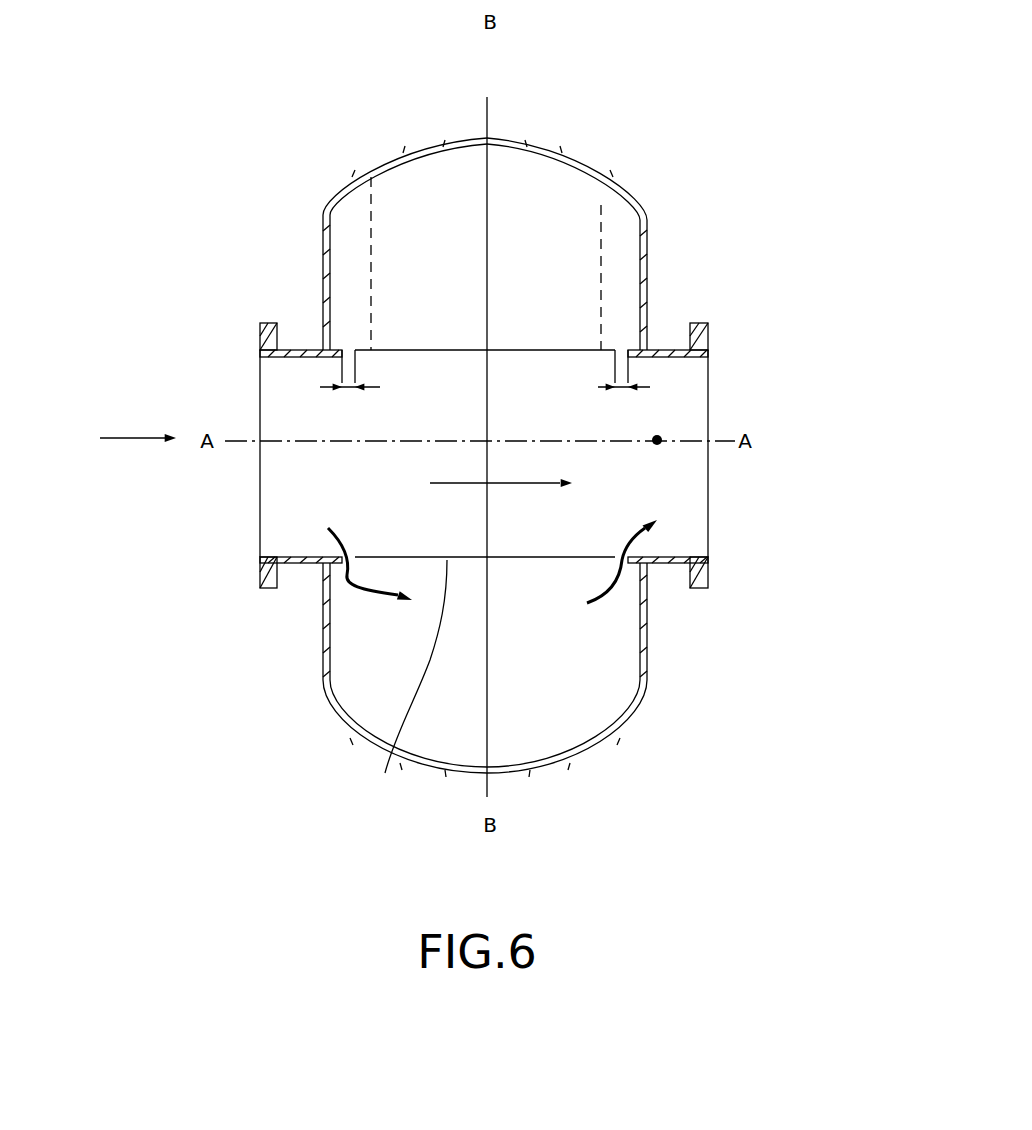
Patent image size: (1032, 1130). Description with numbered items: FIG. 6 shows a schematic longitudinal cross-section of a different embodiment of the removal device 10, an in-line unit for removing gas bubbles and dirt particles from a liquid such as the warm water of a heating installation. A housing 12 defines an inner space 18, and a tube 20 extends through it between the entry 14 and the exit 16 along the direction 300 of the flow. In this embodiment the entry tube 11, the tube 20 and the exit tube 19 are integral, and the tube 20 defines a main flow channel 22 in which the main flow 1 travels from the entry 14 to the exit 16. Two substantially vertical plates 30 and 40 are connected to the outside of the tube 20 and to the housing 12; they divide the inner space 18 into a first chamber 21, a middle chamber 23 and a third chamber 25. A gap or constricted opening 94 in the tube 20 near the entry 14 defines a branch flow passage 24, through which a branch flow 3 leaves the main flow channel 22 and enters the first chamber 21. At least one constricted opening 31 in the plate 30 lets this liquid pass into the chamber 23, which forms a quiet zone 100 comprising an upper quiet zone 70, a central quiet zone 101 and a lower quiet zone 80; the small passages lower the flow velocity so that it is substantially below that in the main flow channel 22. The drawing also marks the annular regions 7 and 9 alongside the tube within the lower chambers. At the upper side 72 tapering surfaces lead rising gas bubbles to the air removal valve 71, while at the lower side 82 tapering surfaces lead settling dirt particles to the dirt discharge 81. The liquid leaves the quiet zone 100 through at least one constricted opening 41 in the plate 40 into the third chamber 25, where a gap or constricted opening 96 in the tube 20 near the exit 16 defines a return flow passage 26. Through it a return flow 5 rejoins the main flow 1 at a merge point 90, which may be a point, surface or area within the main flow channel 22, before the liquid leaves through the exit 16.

The main flow 1 is at (103, 436).
The first partial flow 3 is at (355, 552).
The return flow 5 is at (620, 558).
The lower left annular chamber 7 is at (341, 656).
The lower right annular chamber 9 is at (614, 634).
The removal device 10 is at (622, 128).
The entry tube 11 is at (276, 556).
The housing 12 is at (328, 208).
The entry 14 is at (258, 378).
The exit 16 is at (708, 470).
The inner space 18 is at (413, 328).
The exit tube 19 is at (683, 557).
The tube 20 is at (385, 773).
The first chamber 21 is at (336, 296).
The main flow channel 22 is at (516, 411).
The chamber 23 is at (550, 251).
The branch flow passage 24 is at (350, 347).
The third chamber 25 is at (614, 274).
The return flow passage 26 is at (627, 350).
The plate 30 is at (370, 678).
The constricted opening 31 is at (372, 206).
The plate 40 is at (603, 680).
The constricted opening 41 is at (603, 205).
The upper quiet zone 70 is at (433, 214).
The air removal valve 71 is at (530, 142).
The upper side 72 is at (470, 138).
The lower quiet zone 80 is at (533, 729).
The dirt discharge 81 is at (505, 776).
The lower side 82 is at (437, 770).
The merge point 90 is at (657, 440).
The constricted opening 94 is at (350, 384).
The constricted opening 96 is at (624, 384).
The quiet zone 100 is at (520, 328).
The central quiet zone 101 is at (503, 612).
The direction of the flow 300 is at (501, 494).